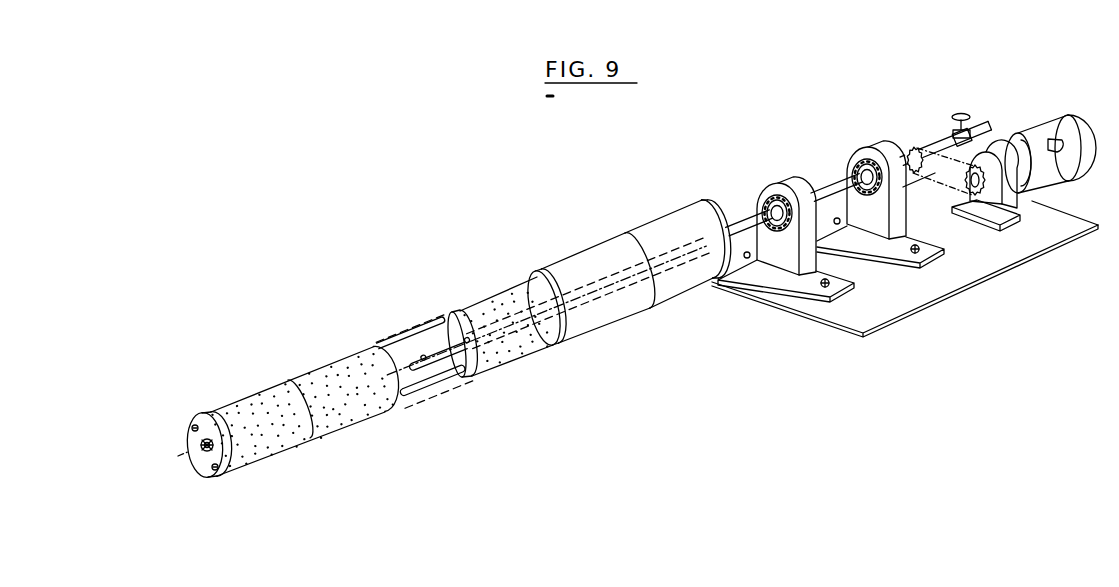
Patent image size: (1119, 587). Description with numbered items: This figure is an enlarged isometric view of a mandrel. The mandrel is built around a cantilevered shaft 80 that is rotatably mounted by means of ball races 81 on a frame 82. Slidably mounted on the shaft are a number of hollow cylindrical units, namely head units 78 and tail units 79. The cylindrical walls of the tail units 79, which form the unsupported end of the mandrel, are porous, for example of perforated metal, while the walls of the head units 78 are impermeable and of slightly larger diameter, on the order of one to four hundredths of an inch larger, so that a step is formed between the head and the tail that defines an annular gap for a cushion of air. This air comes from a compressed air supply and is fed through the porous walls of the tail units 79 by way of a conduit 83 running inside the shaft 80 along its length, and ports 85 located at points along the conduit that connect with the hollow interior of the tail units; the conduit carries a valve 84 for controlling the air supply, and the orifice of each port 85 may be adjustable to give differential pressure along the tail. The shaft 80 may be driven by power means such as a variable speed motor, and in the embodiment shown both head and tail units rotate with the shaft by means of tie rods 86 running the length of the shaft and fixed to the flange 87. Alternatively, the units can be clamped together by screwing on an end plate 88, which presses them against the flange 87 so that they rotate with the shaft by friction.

The head unit 78 is at (585, 262).
The tail unit 79 is at (255, 397).
The cantilevered shaft 80 is at (828, 155).
The ball races 81 is at (905, 297).
The frame 82 is at (1026, 268).
The conduit 83 is at (935, 141).
The valve 84 is at (955, 114).
The ports 85 is at (483, 321).
The tie rods 86 is at (547, 336).
The flange 87 is at (707, 196).
The end plate 88 is at (209, 412).